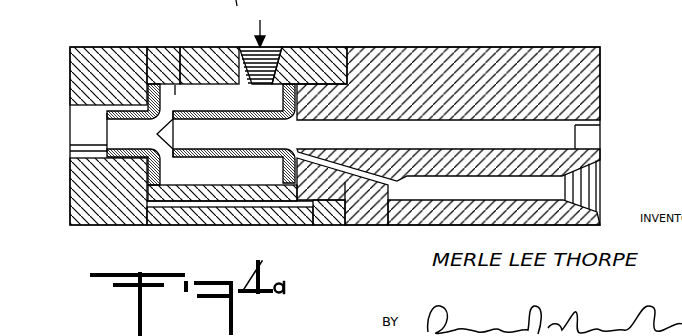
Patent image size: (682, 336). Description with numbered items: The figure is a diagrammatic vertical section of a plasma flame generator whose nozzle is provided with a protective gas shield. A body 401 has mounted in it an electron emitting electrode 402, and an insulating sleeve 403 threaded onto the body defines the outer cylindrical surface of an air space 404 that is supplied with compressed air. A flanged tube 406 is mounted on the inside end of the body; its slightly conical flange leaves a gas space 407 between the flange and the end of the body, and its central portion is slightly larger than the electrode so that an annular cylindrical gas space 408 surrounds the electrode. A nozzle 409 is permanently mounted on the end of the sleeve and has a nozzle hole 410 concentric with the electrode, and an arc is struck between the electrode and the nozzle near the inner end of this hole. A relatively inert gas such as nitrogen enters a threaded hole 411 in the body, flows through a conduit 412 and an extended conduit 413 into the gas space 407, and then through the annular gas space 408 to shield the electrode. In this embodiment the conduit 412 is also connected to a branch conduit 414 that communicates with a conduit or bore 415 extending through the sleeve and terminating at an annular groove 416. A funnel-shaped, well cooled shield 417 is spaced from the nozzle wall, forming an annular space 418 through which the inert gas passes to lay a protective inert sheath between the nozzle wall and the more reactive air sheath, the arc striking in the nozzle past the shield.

The body 401 is at (508, 70).
The electron emitting electrode 402 is at (441, 142).
The insulating sleeve 403 is at (321, 48).
The air space 404 is at (174, 47).
The flanged tube 406 is at (244, 52).
The gas space 407 is at (287, 107).
The annular cylindrical gas space 408 is at (203, 158).
The nozzle 409 is at (112, 58).
The nozzle hole 410 is at (82, 118).
The threaded hole 411 is at (602, 178).
The conduit 412 is at (517, 197).
The extended conduit 413 is at (388, 195).
The branch conduit 414 is at (362, 205).
The conduit or bore 415 is at (313, 219).
The annular groove 416 is at (144, 190).
The shield 417 is at (72, 145).
The annular space 418 is at (72, 151).